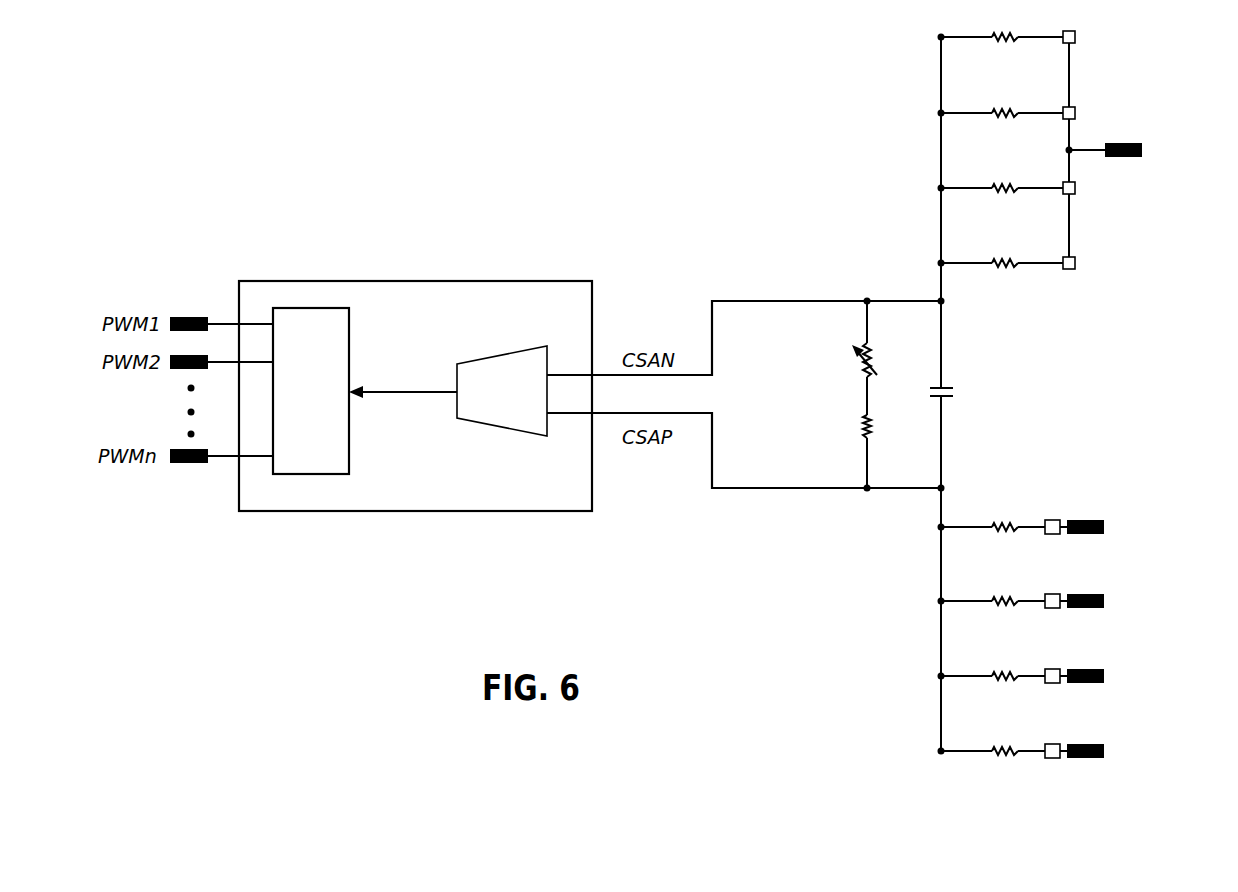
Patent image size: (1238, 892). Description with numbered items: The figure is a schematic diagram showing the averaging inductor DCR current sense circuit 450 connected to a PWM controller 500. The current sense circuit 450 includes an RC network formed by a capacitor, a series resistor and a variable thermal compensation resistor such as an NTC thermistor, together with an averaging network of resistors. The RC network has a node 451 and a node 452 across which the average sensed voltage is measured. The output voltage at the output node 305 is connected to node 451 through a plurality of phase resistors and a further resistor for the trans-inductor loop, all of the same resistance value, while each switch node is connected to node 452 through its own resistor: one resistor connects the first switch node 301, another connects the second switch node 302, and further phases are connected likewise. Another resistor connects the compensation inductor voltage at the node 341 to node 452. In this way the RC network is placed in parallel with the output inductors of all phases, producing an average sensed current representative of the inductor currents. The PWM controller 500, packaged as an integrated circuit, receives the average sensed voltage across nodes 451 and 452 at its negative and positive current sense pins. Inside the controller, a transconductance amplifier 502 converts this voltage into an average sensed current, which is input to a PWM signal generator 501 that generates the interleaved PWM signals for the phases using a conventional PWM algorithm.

The PWM controller 500 is at (389, 281).
The PWM signal generator 501 is at (311, 391).
The transconductance amplifier 502 is at (502, 348).
The current sense circuit 450 is at (766, 186).
The node 451 is at (865, 298).
The node 452 is at (866, 492).
The output node 305 is at (1121, 143).
The node 341 is at (1084, 520).
The switch node 302 is at (1084, 669).
The switch node 301 is at (1084, 744).